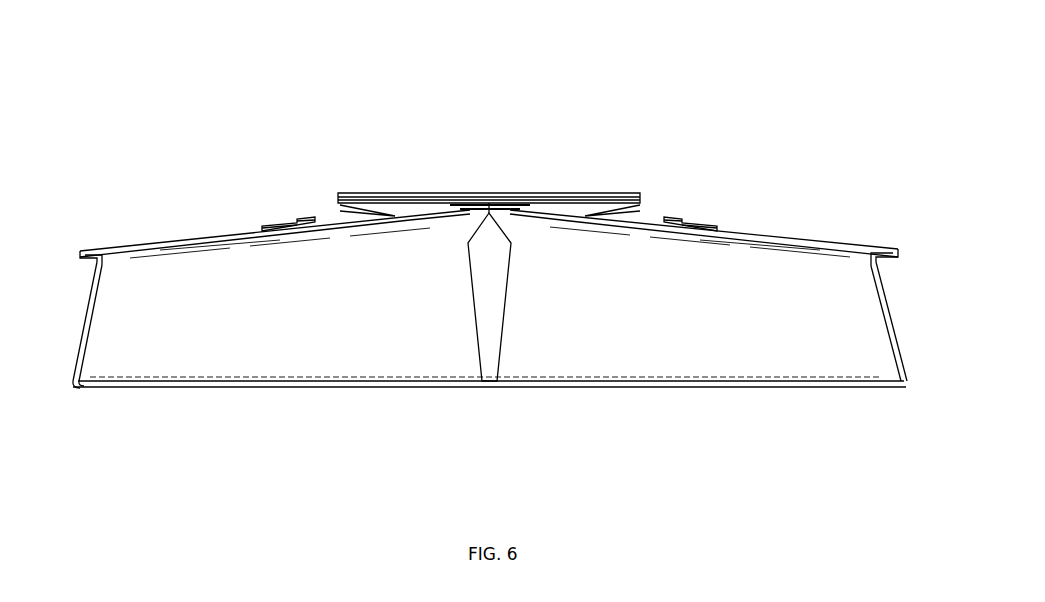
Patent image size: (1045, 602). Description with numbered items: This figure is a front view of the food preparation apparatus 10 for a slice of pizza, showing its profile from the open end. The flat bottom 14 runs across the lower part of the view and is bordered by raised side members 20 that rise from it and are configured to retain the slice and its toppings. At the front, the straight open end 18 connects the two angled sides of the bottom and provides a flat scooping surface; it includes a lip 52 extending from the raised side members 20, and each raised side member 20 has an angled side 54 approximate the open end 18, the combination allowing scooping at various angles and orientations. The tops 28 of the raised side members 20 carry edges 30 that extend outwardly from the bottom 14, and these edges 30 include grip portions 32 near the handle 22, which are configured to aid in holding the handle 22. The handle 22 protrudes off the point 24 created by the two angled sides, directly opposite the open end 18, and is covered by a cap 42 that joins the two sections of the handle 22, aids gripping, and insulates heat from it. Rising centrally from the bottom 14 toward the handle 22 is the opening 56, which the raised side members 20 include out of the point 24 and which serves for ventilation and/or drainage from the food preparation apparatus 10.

The food preparation apparatus 10 is at (258, 55).
The flat bottom 14 is at (401, 345).
The open end 18 is at (402, 389).
The raised side members 20 is at (186, 355).
The handle 22 is at (604, 182).
The point 24 is at (488, 410).
The tops 28 is at (78, 274).
The edges 30 is at (172, 242).
The grip portions 32 is at (275, 205).
The cap 42 is at (343, 190).
The lip 52 is at (98, 391).
The angled side 54 is at (83, 330).
The opening 56 is at (500, 271).